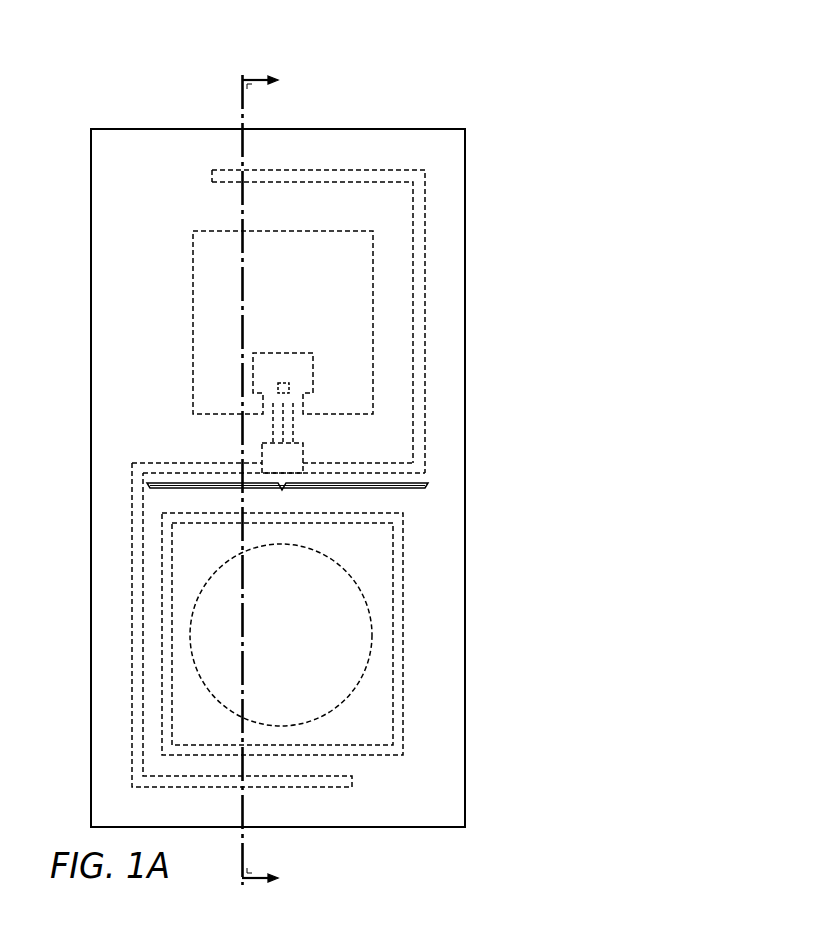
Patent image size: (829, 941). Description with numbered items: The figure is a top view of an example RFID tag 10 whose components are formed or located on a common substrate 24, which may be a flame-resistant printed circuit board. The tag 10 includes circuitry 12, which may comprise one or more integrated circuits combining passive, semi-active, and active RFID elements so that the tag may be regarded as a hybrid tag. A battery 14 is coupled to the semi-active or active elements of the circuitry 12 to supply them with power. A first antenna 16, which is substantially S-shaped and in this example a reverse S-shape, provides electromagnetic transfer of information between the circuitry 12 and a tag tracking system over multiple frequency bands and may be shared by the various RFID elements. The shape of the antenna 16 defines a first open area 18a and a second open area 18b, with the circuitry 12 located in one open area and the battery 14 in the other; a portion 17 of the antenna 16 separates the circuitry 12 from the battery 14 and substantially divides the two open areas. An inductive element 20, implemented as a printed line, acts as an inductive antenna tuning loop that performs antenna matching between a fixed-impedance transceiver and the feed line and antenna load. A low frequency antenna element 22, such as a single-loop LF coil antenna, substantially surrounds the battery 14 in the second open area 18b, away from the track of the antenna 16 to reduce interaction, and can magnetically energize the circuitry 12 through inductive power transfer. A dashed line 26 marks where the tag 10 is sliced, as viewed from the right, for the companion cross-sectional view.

The tag 10 is at (398, 105).
The circuitry 12 is at (297, 303).
The battery 14 is at (295, 650).
The first antenna 16 is at (155, 462).
The portion of antenna 17 is at (282, 490).
The first open area 18a is at (393, 320).
The second open area 18b is at (152, 630).
The inductive element 20 is at (303, 452).
The LF antenna element 22 is at (380, 758).
The substrate 24 is at (465, 203).
The dashed line 26 is at (242, 115).